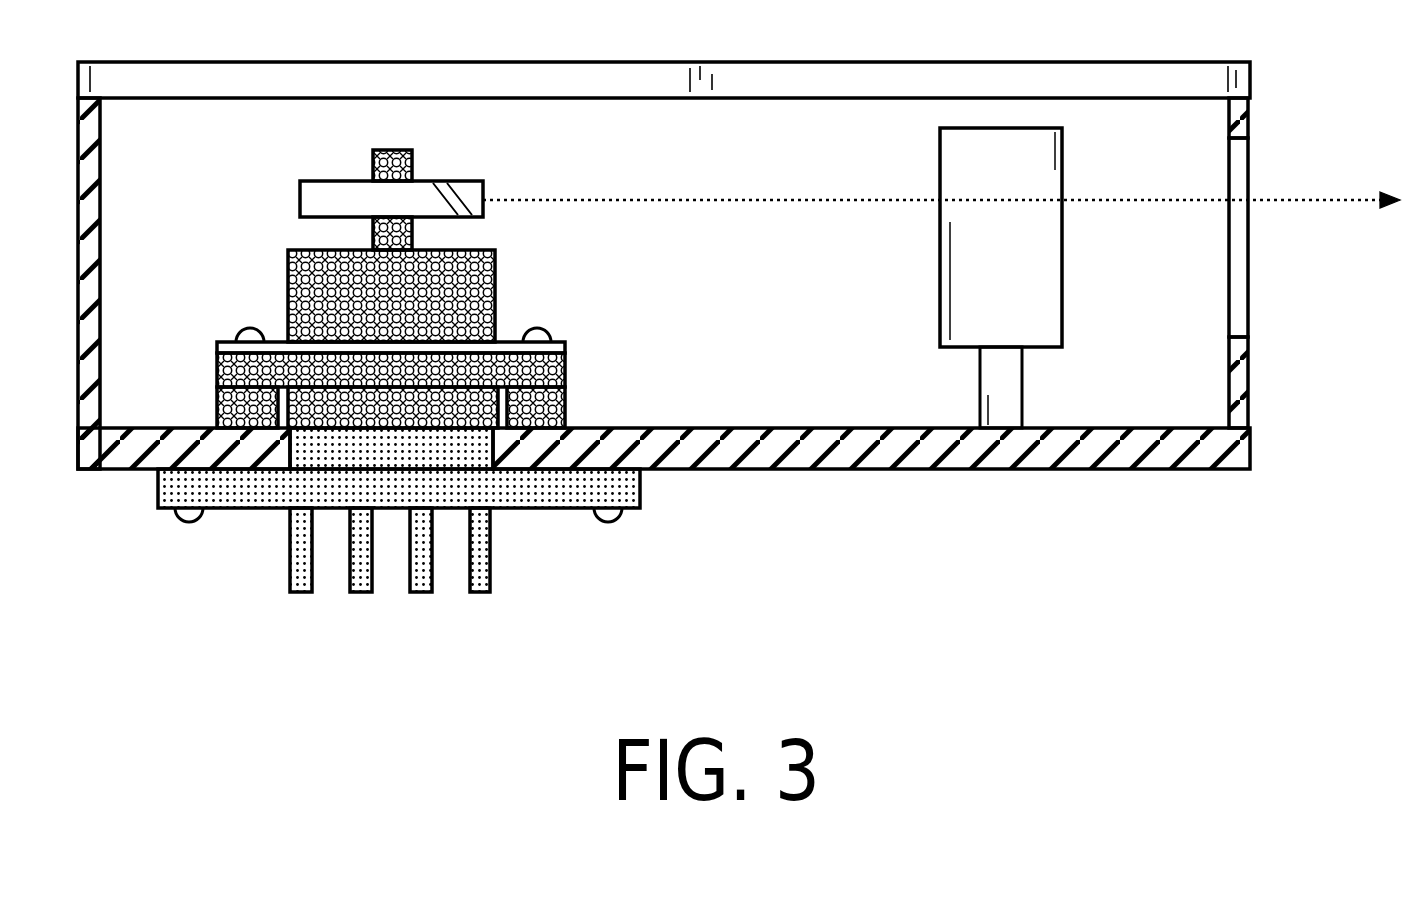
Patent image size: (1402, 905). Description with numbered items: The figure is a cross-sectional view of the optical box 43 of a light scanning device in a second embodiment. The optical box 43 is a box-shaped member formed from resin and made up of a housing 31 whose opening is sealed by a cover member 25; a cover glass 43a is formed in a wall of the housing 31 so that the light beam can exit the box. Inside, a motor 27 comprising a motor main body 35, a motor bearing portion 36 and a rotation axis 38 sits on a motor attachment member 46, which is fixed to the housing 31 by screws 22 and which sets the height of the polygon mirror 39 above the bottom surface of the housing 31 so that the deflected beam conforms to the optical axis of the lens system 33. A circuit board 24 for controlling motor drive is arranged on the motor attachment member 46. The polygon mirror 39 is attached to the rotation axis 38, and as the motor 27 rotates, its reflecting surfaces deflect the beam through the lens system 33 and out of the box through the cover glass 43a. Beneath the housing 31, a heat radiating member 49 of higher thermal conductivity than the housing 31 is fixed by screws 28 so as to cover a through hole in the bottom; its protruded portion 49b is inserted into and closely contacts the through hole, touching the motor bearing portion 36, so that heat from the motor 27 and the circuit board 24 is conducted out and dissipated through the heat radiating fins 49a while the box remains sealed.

The cover member 25 is at (733, 78).
The optical box 43 is at (724, 279).
The window 43a is at (1250, 292).
The housing 31 is at (1113, 472).
The lens system 33 is at (1047, 275).
The motor 27 is at (395, 265).
The rotation axis 38 is at (373, 165).
The polygon mirror 39 is at (445, 185).
The motor main body 35 is at (288, 265).
The screws 22 is at (245, 328).
The circuit board 24 is at (217, 350).
The motor attachment member 46 is at (565, 352).
The motor bearing portion 36 is at (305, 398).
The heat radiating member 49 is at (428, 537).
The heat radiating fins 49a is at (430, 570).
The protruded portion 49b is at (300, 458).
The screws 28 is at (612, 518).